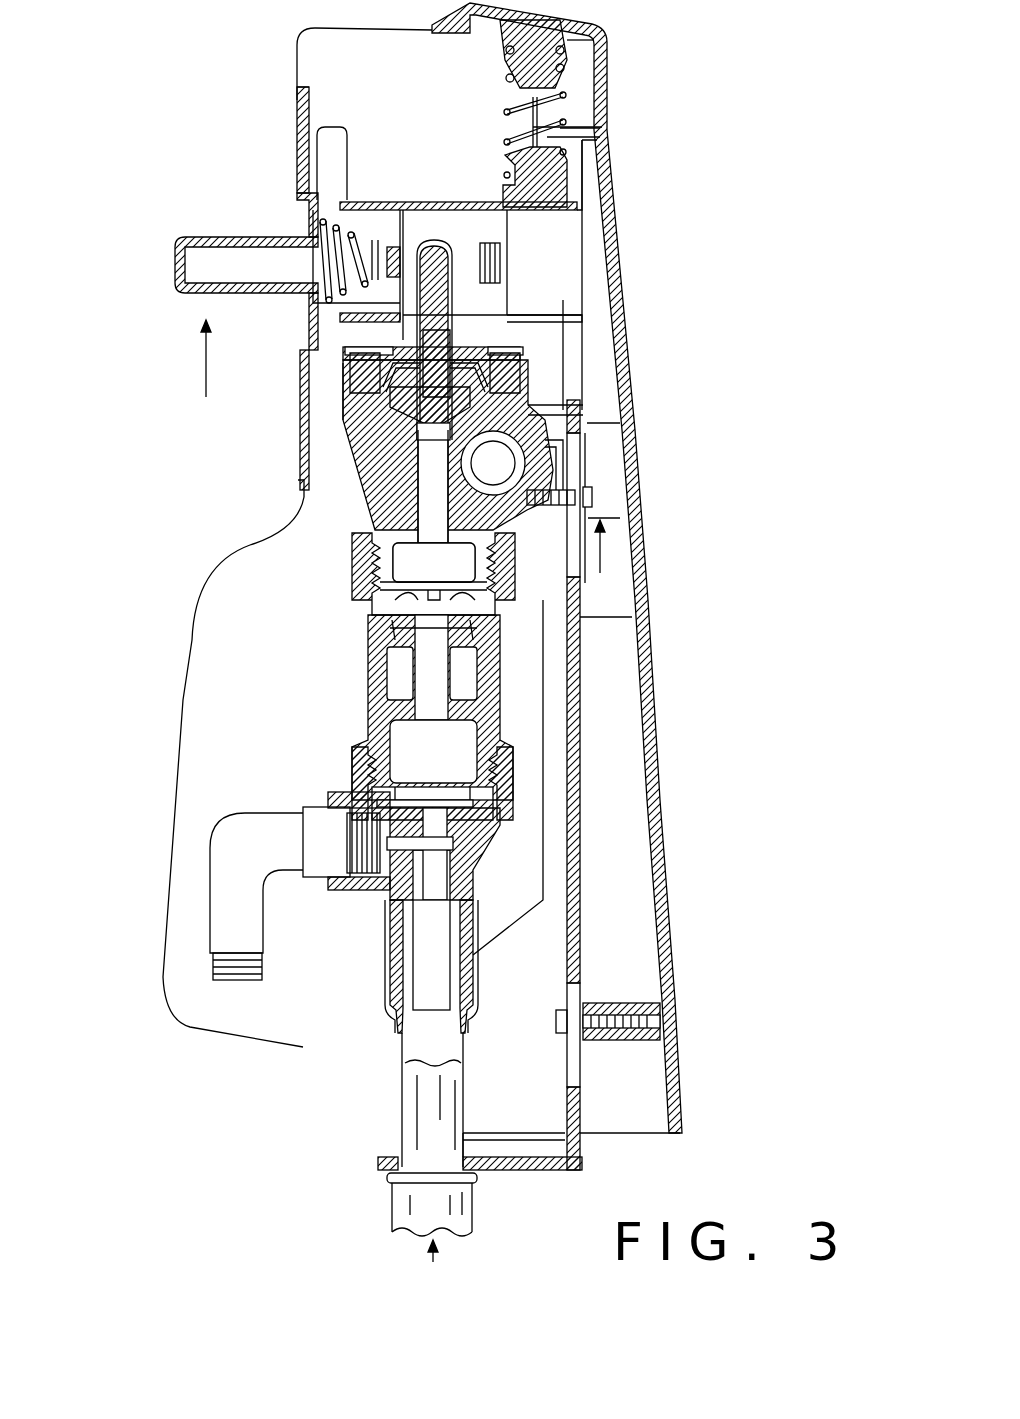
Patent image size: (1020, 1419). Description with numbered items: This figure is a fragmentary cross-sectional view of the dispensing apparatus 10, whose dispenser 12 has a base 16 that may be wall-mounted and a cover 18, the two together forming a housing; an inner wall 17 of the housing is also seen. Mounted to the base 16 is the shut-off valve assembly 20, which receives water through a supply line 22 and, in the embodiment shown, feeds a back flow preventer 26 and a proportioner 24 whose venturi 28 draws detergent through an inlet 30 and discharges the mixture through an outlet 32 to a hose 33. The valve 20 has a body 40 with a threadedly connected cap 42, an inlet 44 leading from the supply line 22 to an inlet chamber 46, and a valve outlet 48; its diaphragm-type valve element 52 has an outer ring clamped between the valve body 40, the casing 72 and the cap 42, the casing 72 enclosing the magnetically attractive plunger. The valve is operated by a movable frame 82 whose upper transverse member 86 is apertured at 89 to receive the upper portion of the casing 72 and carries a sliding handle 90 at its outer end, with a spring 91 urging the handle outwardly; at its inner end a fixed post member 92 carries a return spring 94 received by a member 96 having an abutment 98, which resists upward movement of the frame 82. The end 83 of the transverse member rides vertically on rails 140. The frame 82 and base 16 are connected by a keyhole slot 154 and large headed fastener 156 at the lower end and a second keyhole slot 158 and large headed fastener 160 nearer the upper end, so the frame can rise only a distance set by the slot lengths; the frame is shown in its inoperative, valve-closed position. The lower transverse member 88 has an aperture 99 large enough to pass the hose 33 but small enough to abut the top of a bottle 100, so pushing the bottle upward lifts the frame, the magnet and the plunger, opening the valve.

The dispensing apparatus 10 is at (189, 125).
The dispenser 12 is at (364, 717).
The base 16 is at (505, 568).
The housing inner wall 17 is at (637, 742).
The cover 18 is at (186, 652).
The shut-off valve assembly 20 is at (287, 425).
The supply line 22 is at (497, 466).
The proportioner 24 is at (352, 771).
The back flow preventer 26 is at (353, 577).
The venturi 28 is at (400, 903).
The inlet 30 is at (303, 825).
The outlet 32 is at (390, 968).
The hose 33 is at (398, 1093).
The body 40 is at (377, 497).
The cap 42 is at (340, 351).
The inlet 44 is at (462, 435).
The inlet chamber 46 is at (585, 426).
The valve outlet 48 is at (432, 512).
The valve element 52 is at (520, 382).
The casing 72 is at (440, 296).
The frame 82 is at (544, 221).
The end of the transverse body 83 is at (582, 282).
The upper transverse member 86 is at (473, 202).
The lower transverse member 88 is at (537, 1170).
The aperture 89 is at (531, 282).
The handle 90 is at (175, 266).
The spring 91 is at (372, 240).
The post member 92 is at (543, 215).
The return spring 94 is at (566, 150).
The member 96 is at (510, 67).
The abutment 98 is at (573, 65).
The aperture 99 is at (470, 1150).
The bottle 100 is at (390, 1195).
The rails 140 is at (590, 220).
The keyhole slot 154 is at (585, 1057).
The large headed fastener 156 is at (556, 1020).
The second keyhole slot 158 is at (587, 448).
The large headed fastener 160 is at (590, 500).